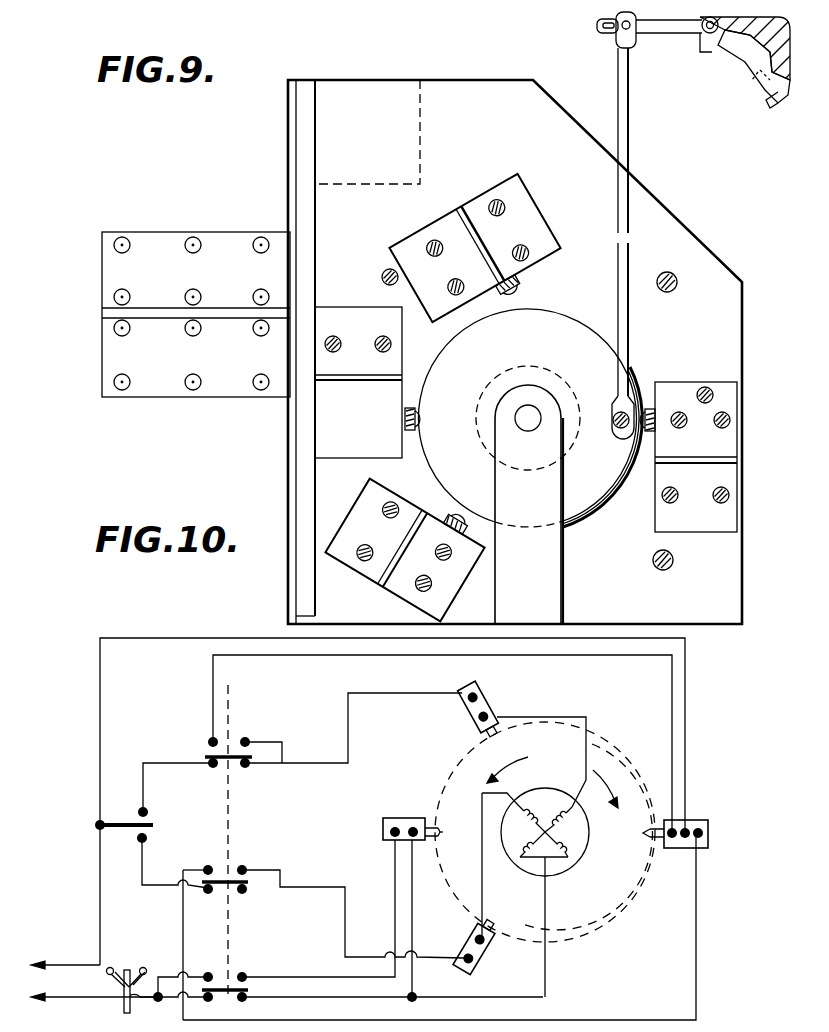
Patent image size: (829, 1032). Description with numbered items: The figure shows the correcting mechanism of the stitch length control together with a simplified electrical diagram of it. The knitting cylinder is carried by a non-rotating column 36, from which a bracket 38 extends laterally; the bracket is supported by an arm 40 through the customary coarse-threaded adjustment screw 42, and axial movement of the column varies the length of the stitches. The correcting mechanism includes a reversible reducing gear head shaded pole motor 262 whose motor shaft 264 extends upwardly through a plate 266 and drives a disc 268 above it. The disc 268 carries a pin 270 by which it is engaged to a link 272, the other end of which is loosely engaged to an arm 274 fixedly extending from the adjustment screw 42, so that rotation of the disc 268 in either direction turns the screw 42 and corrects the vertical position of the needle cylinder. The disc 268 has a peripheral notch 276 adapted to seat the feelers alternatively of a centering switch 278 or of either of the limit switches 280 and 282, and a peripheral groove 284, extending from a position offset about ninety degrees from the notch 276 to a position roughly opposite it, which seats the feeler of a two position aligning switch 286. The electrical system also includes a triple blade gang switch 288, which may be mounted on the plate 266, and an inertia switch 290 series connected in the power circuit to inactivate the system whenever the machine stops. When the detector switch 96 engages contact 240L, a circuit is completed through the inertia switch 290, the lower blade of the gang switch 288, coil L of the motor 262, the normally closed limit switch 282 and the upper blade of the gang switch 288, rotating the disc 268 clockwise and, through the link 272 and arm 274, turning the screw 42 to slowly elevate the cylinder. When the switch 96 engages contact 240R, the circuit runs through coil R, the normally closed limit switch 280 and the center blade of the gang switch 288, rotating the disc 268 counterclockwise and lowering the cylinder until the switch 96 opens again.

In FIG. 9, the non-rotating column 36 is at (742, 70).
In FIG. 9, the bracket 38 is at (775, 98).
In FIG. 9, the arm 40 is at (702, 45).
In FIG. 9, the adjustment screw 42 is at (700, 38).
In FIG. 10, the detector switch 96 is at (112, 824).
In FIG. 10, the left contact 240L is at (147, 811).
In FIG. 10, the right contact 240R is at (145, 838).
In FIG. 10, the reversible reducing gear head shaded pole motor 262 is at (589, 852).
In FIG. 9, the motor shaft 264 is at (530, 405).
In FIG. 9, the plate 266 is at (693, 616).
In FIG. 9, the disc 268 is at (596, 524).
In FIG. 10, the disc 268 is at (579, 930).
In FIG. 9, the pin 270 is at (617, 436).
In FIG. 9, the link 272 is at (622, 340).
In FIG. 9, the arm 274 is at (660, 32).
In FIG. 9, the peripheral notch 276 is at (422, 408).
In FIG. 10, the peripheral notch 276 is at (445, 812).
In FIG. 9, the centering switch 278 is at (374, 420).
In FIG. 10, the centering switch 278 is at (384, 831).
In FIG. 9, the limit switch 280 is at (382, 539).
In FIG. 10, the limit switch 280 is at (486, 950).
In FIG. 9, the limit switch 282 is at (475, 254).
In FIG. 10, the limit switch 282 is at (500, 690).
In FIG. 9, the peripheral groove 284 is at (592, 504).
In FIG. 10, the peripheral groove 284 is at (614, 906).
In FIG. 9, the two position aligning switch 286 is at (717, 488).
In FIG. 10, the two position aligning switch 286 is at (708, 838).
In FIG. 9, the triple blade gang switch 288 is at (213, 384).
In FIG. 10, the triple blade gang switch 288 is at (229, 720).
In FIG. 10, the inertia switch 290 is at (122, 1001).